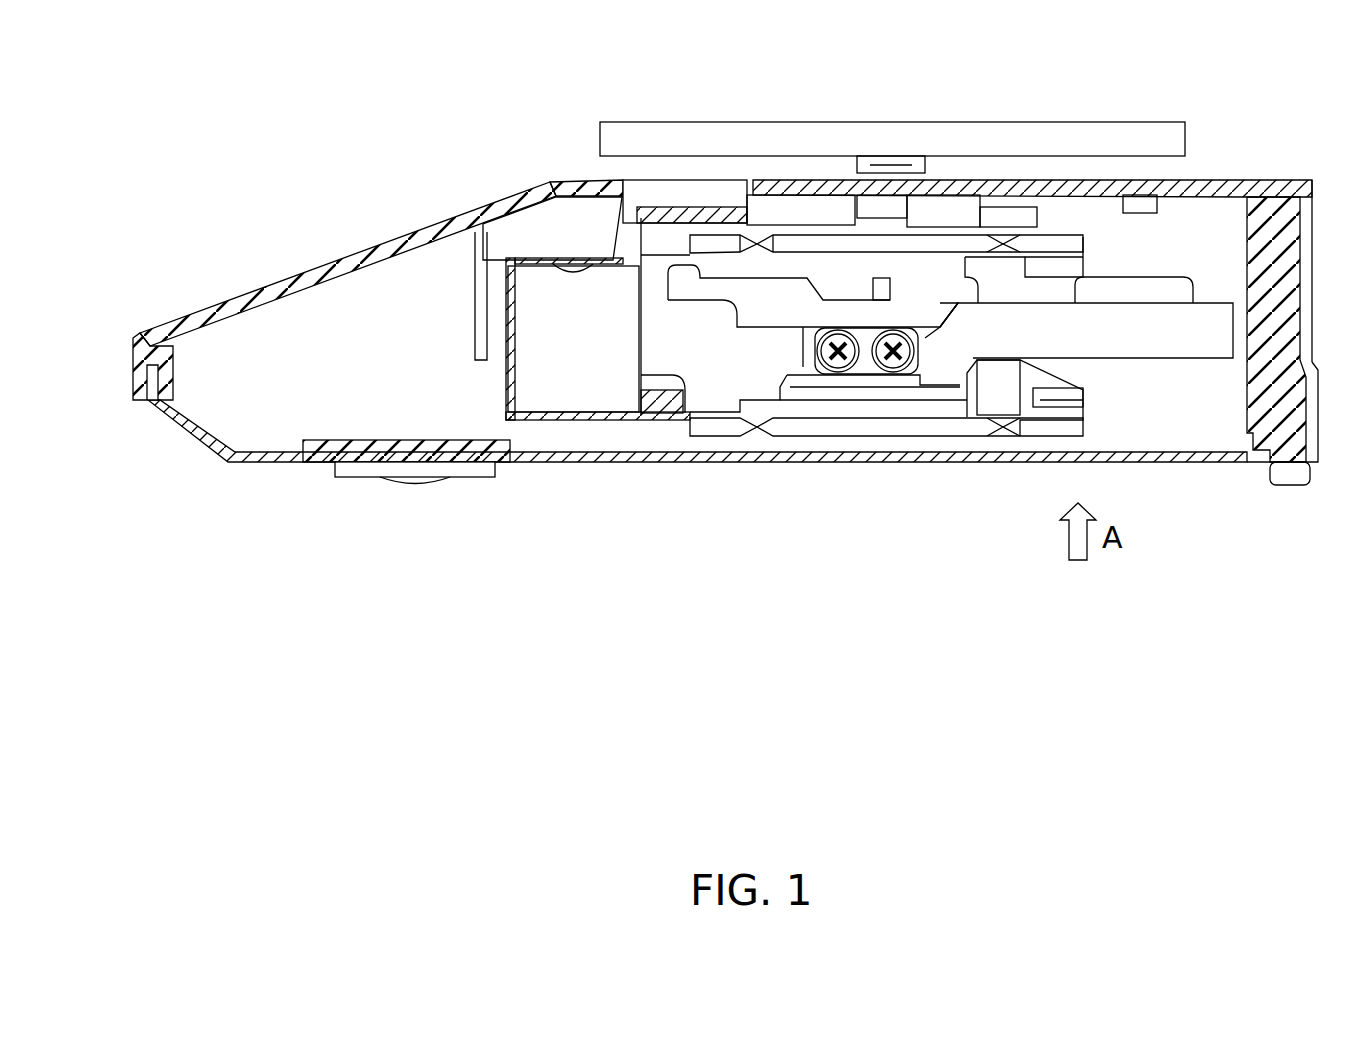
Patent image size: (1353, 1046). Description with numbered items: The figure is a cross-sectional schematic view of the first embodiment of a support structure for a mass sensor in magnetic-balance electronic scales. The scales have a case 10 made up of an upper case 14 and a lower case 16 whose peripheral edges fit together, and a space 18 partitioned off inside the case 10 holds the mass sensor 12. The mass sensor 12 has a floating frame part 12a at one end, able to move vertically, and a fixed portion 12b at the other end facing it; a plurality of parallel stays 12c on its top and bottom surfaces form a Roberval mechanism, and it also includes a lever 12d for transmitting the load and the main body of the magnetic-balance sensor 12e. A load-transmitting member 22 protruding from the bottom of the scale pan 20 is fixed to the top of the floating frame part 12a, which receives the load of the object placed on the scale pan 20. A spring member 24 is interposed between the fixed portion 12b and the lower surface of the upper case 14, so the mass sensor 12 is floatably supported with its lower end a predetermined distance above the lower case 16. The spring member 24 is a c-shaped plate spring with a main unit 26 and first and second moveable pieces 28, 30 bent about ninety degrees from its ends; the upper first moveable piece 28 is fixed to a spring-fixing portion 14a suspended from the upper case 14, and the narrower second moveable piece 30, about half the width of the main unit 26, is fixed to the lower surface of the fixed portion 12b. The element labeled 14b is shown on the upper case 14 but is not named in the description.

The case 10 is at (203, 298).
The mass sensor 12 is at (1098, 250).
The floating frame part 12a is at (1010, 212).
The fixed portion 12b is at (658, 347).
The stays 12c is at (905, 248).
The lever 12d is at (1118, 350).
The main body of the magnetic-balance sensor 12e is at (1175, 300).
The upper case 14 is at (478, 210).
The spring-fixing portion 14a is at (575, 216).
The cover plate 14b is at (683, 212).
The lower case 16 is at (276, 464).
The space 18 is at (1193, 214).
The scale pan 20 is at (760, 137).
The load-transmitting member 22 is at (880, 186).
The spring member 24 is at (494, 392).
The main unit 26 is at (475, 340).
The first moveable piece 28 is at (548, 268).
The second moveable piece 30 is at (600, 422).